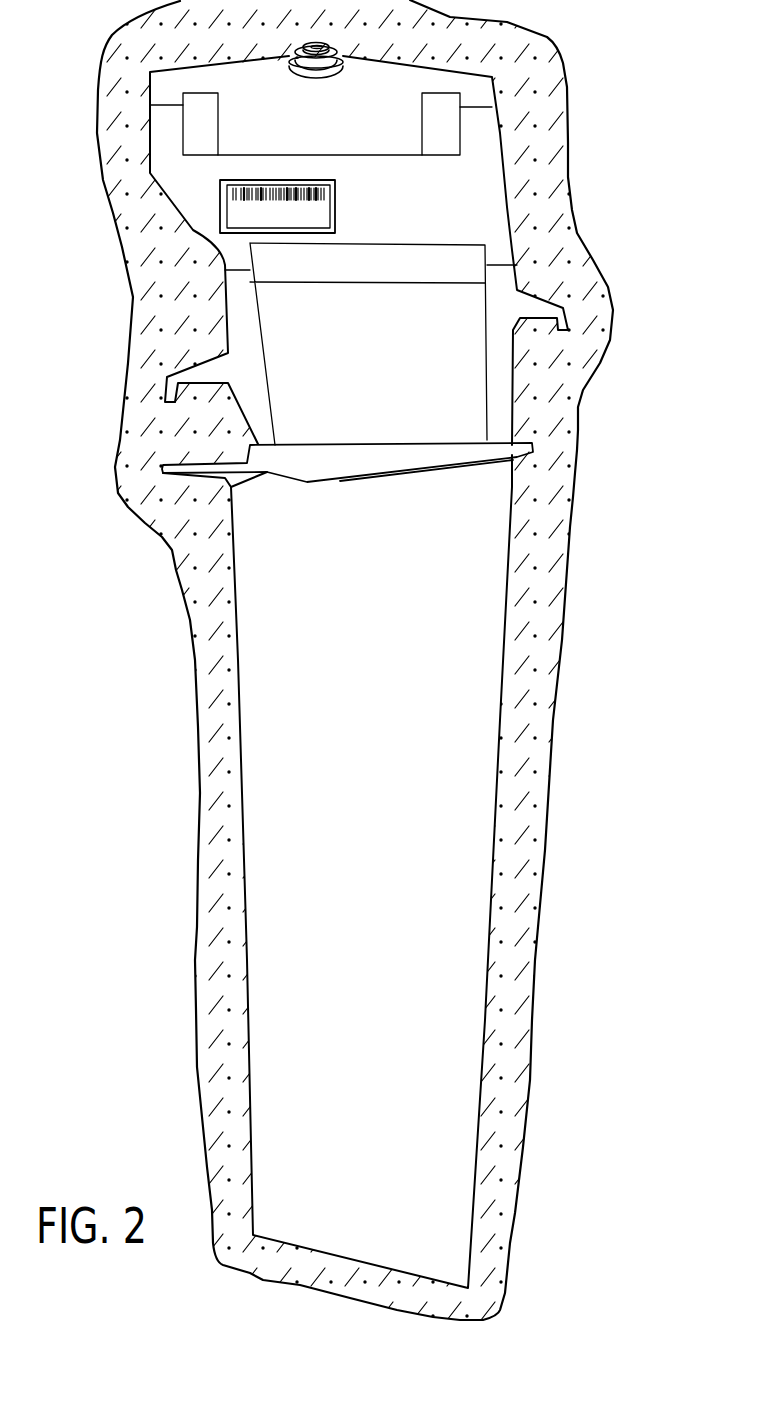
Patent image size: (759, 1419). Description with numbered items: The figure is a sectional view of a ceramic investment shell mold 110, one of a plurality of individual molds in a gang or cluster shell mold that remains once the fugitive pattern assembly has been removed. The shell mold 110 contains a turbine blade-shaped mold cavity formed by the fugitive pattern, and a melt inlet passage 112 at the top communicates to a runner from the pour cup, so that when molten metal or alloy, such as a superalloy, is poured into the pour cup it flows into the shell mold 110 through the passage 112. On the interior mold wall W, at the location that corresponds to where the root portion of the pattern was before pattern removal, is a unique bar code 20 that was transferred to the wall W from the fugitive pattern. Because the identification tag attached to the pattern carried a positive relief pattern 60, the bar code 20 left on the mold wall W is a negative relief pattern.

The interior mold wall W is at (488, 196).
The investment shell mold 110 is at (213, 923).
The melt inlet passage 112 is at (326, 65).
The bar code 20 is at (214, 197).
The positive relief pattern 60 is at (292, 179).